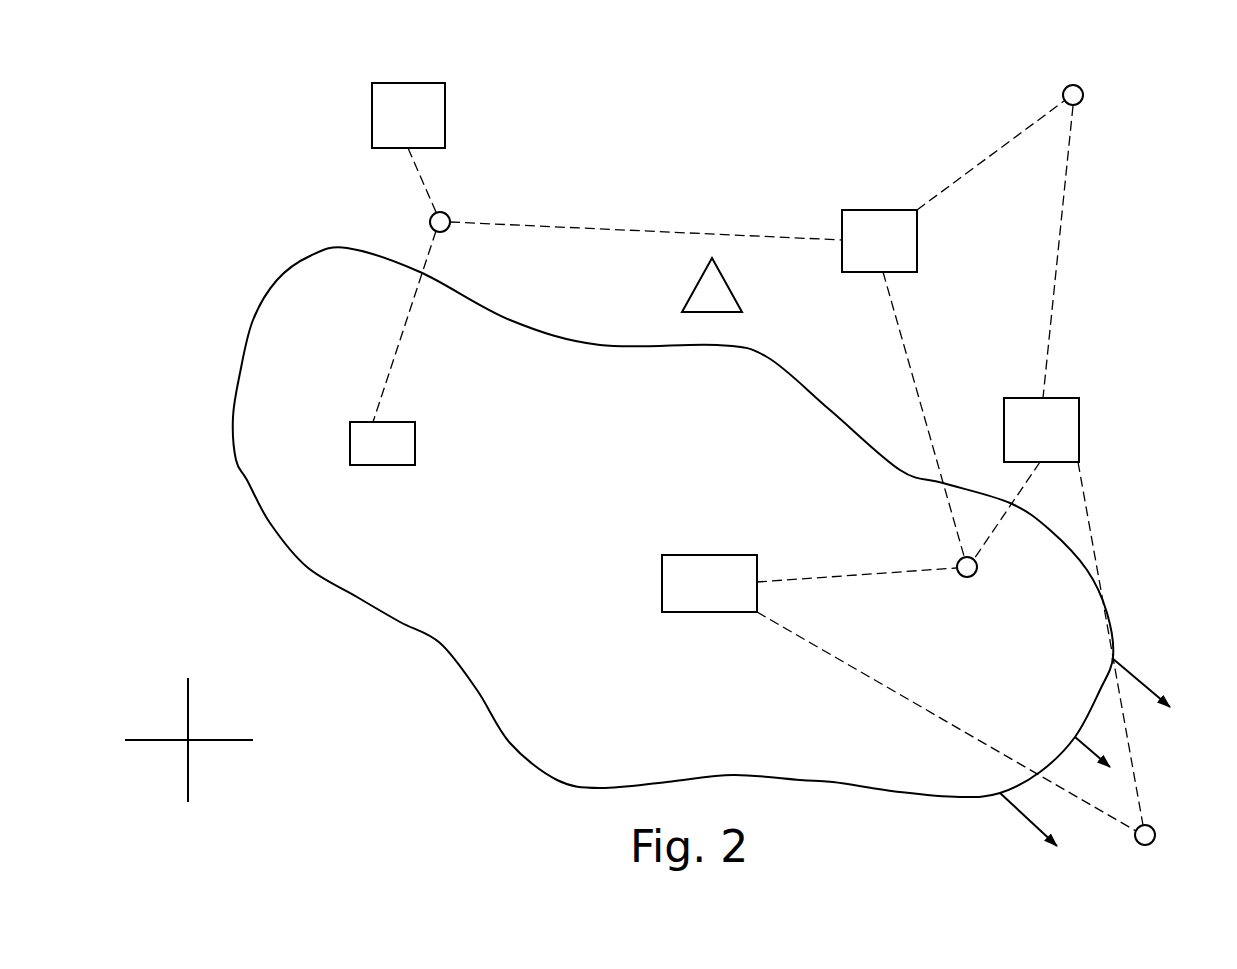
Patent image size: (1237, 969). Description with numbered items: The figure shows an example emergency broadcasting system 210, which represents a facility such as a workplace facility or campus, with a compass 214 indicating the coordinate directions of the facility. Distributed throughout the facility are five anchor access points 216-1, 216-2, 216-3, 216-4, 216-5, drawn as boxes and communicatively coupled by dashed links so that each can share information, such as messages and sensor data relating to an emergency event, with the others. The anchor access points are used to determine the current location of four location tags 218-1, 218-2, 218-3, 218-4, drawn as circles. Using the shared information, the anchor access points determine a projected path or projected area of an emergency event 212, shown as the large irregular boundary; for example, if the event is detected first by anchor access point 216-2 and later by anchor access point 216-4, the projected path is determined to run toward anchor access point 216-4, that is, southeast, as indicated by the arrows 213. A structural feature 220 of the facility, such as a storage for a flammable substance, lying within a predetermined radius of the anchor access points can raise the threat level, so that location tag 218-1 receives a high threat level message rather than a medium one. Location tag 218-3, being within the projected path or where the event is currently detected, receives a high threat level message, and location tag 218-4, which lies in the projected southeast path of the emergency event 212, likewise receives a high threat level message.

The emergency broadcasting system 210 is at (898, 72).
The emergency event 212 is at (270, 271).
The arrows 213 is at (1096, 741).
The compass 214 is at (236, 776).
The anchor access point 216-1 is at (414, 83).
The anchor access point 216-2 is at (415, 443).
The anchor access point 216-3 is at (874, 210).
The anchor access point 216-4 is at (708, 555).
The anchor access point 216-5 is at (1079, 431).
The location tag 218-1 is at (430, 221).
The location tag 218-2 is at (1083, 92).
The location tag 218-3 is at (966, 577).
The location tag 218-4 is at (1155, 834).
The structural feature 220 is at (698, 287).